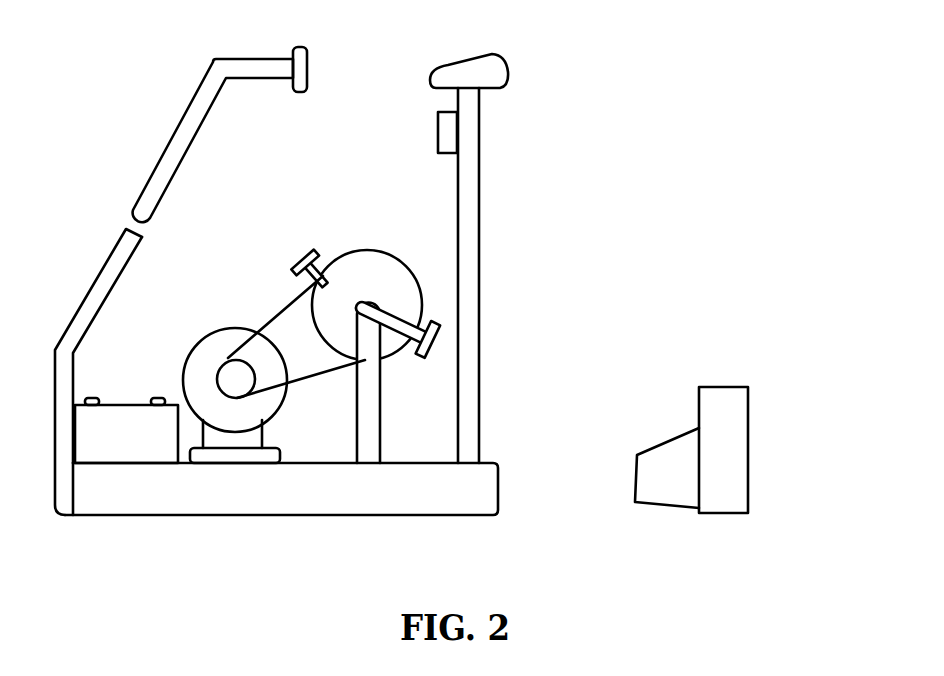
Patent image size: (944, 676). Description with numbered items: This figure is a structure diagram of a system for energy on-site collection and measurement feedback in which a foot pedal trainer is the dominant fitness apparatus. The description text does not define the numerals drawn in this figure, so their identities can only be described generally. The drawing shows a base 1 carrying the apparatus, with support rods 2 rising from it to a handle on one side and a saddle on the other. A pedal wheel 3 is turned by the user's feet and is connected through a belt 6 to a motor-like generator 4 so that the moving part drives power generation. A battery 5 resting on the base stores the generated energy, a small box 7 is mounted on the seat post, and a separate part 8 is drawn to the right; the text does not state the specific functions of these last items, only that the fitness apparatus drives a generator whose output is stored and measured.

The base 1 is at (83, 493).
The support rod 2 is at (207, 95).
The pedal flywheel 3 is at (395, 330).
The motor 4 is at (215, 408).
The battery 5 is at (125, 445).
The transmission belt 6 is at (303, 382).
The control box 7 is at (448, 135).
The mobile phone holder 8 is at (727, 458).